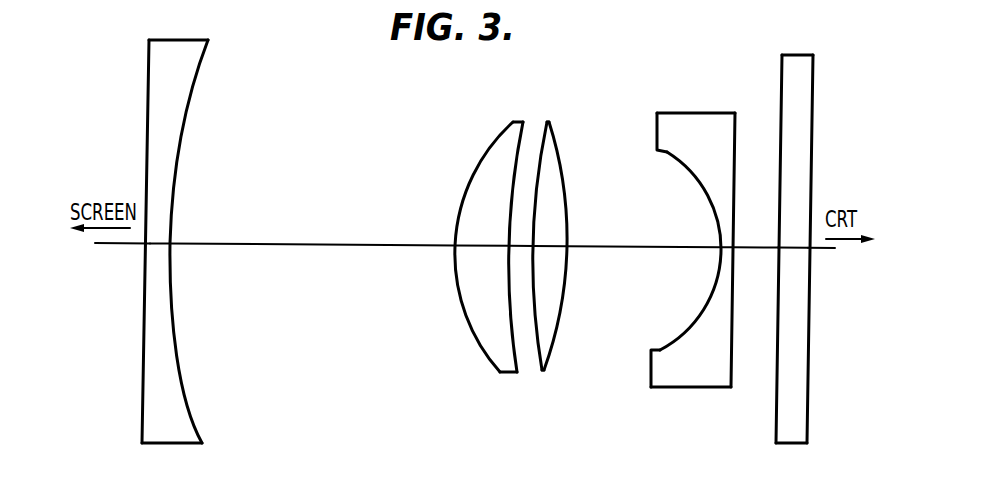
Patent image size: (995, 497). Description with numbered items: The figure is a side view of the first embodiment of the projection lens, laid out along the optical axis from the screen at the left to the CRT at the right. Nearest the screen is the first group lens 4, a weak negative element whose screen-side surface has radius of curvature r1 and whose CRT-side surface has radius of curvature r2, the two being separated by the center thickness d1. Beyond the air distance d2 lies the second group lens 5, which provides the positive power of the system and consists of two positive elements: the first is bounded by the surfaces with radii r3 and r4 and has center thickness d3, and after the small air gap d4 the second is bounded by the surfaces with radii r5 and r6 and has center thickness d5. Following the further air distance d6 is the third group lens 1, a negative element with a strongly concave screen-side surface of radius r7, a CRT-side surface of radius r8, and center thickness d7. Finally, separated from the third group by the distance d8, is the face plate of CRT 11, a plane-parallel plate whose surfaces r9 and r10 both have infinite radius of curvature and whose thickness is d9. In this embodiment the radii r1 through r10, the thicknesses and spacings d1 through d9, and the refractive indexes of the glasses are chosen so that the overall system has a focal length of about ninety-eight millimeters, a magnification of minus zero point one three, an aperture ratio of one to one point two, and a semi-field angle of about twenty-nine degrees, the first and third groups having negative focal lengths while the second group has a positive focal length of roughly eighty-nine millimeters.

The third group lens 1 is at (704, 273).
The first group lens 4 is at (166, 268).
The second group lens 5 is at (515, 267).
The face plate of CRT 11 is at (804, 269).
The radius of curvature of first surface r1 is at (150, 127).
The radius of curvature of second surface r2 is at (180, 130).
The radius of curvature of third surface r3 is at (460, 200).
The radius of curvature of fourth surface r4 is at (512, 195).
The radius of curvature of fifth surface r5 is at (535, 198).
The radius of curvature of sixth surface r6 is at (570, 200).
The radius of curvature of seventh surface r7 is at (670, 158).
The radius of curvature of eighth surface r8 is at (735, 158).
The radius of curvature of ninth surface r9 is at (778, 198).
The radius of curvature of tenth surface r10 is at (812, 195).
The center thickness of first group lens d1 is at (164, 263).
The distance between first and second groups d2 is at (312, 263).
The center thickness of first element of second group d3 is at (482, 264).
The distance between elements of second group d4 is at (520, 250).
The center thickness of second element of second group d5 is at (550, 265).
The distance between second and third groups d6 is at (644, 265).
The center thickness of third group lens d7 is at (718, 262).
The distance between third group and face plate d8 is at (755, 268).
The center thickness of face plate d9 is at (793, 268).